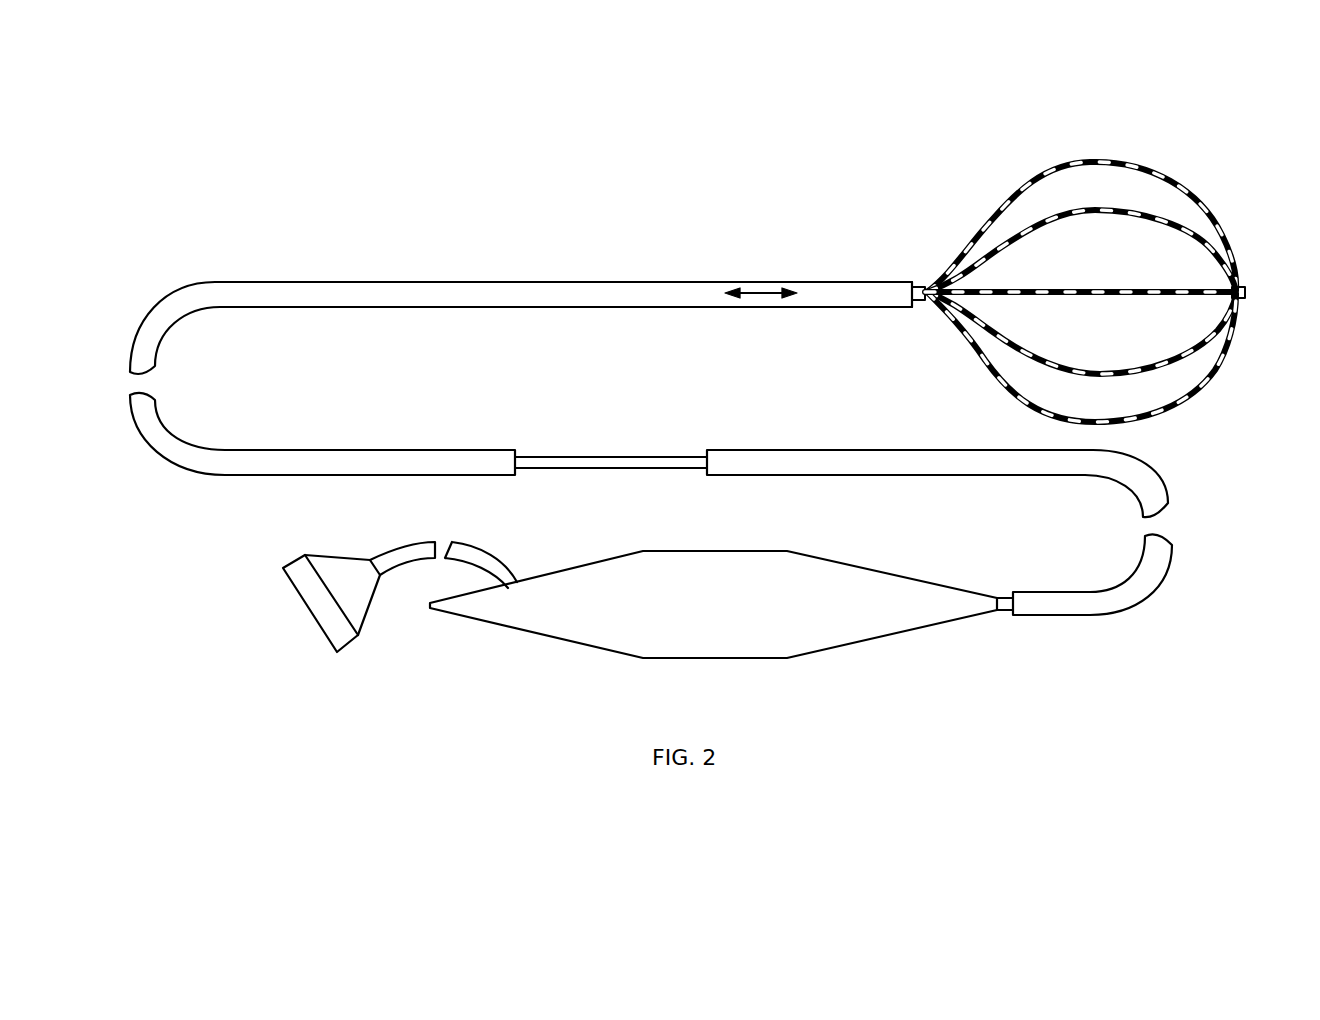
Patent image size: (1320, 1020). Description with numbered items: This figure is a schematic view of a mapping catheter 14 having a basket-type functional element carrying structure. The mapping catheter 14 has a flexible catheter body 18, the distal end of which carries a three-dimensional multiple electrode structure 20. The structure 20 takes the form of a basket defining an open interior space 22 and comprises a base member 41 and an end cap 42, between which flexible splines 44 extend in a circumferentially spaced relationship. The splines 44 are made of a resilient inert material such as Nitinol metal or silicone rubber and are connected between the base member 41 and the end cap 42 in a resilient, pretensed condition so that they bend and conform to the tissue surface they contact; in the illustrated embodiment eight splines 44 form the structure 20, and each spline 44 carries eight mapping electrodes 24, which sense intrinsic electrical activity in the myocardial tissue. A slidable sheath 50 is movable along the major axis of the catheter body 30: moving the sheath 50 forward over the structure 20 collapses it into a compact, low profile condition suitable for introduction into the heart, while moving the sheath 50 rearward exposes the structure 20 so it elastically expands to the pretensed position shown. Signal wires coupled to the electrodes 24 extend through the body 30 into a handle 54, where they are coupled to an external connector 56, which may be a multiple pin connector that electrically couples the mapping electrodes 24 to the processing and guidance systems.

The mapping catheter 14 is at (623, 187).
The catheter body 18 is at (923, 281).
The three-dimensional multiple electrode structure 20 is at (1236, 189).
The open interior space 22 is at (1137, 342).
The mapping electrodes 24 is at (1187, 185).
The catheter body 30 is at (1123, 372).
The base member 41 is at (932, 304).
The end cap 42 is at (1247, 291).
The flexible splines 44 is at (1004, 195).
The slidable sheath 50 is at (770, 281).
The handle 54 is at (878, 570).
The external connector 56 is at (299, 568).